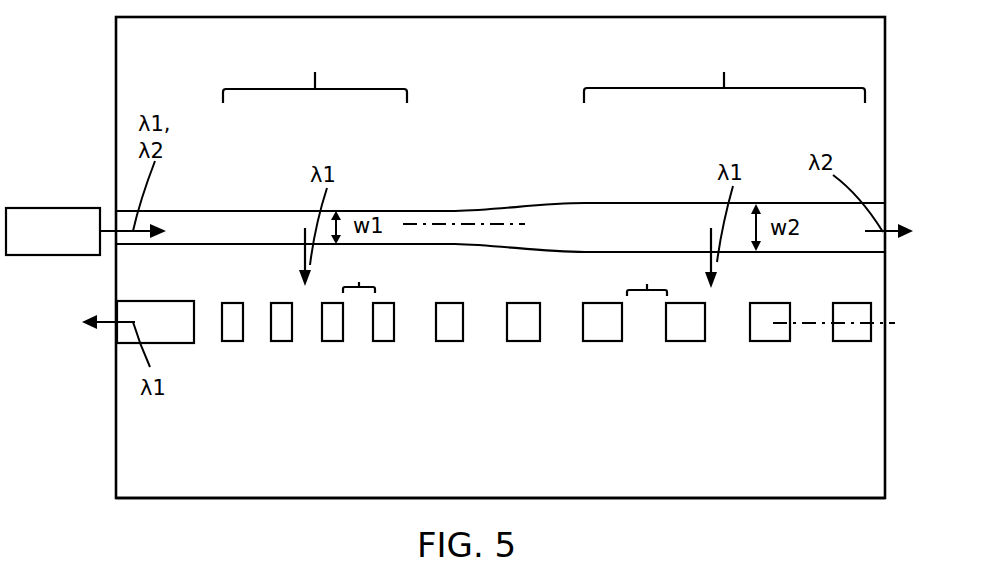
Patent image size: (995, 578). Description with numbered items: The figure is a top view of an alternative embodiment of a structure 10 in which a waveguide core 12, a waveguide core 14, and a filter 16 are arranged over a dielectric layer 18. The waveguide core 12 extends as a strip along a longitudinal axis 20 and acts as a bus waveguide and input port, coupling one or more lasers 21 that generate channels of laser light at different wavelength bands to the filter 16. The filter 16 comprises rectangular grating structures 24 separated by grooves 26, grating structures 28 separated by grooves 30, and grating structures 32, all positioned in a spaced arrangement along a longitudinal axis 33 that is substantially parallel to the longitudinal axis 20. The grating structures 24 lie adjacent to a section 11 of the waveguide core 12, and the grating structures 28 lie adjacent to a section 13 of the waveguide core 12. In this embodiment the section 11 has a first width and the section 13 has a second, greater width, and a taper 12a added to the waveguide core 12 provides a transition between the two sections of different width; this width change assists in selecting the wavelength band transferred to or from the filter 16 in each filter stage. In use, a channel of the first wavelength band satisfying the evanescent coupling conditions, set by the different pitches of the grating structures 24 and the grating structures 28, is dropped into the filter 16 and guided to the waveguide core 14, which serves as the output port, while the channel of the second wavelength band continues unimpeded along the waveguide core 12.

The structure 10 is at (132, 66).
The section 11 is at (315, 73).
The waveguide core 12 is at (268, 225).
The taper 12a is at (508, 205).
The section 13 is at (724, 73).
The waveguide core 14 is at (172, 333).
The filter 16 is at (252, 287).
The dielectric layer 18 is at (160, 453).
The longitudinal axis 20 is at (470, 222).
The lasers 21 is at (52, 208).
The grating structures 24 is at (333, 330).
The grooves 26 is at (359, 275).
The grating structures 28 is at (690, 332).
The grooves 30 is at (647, 277).
The grating structures 32 is at (450, 332).
The longitudinal axis 33 is at (805, 323).